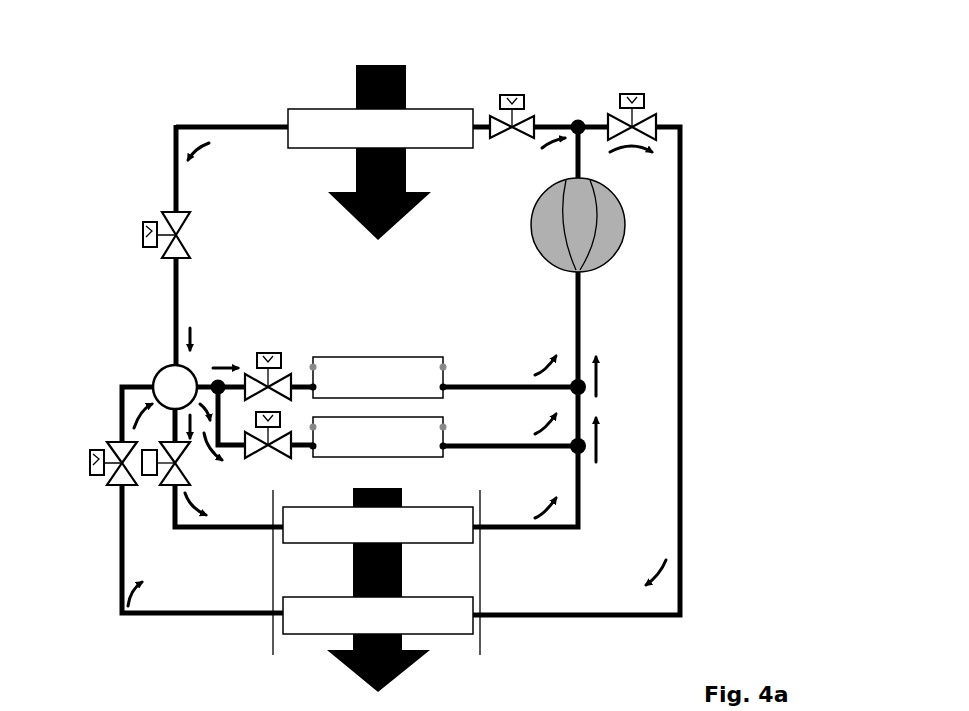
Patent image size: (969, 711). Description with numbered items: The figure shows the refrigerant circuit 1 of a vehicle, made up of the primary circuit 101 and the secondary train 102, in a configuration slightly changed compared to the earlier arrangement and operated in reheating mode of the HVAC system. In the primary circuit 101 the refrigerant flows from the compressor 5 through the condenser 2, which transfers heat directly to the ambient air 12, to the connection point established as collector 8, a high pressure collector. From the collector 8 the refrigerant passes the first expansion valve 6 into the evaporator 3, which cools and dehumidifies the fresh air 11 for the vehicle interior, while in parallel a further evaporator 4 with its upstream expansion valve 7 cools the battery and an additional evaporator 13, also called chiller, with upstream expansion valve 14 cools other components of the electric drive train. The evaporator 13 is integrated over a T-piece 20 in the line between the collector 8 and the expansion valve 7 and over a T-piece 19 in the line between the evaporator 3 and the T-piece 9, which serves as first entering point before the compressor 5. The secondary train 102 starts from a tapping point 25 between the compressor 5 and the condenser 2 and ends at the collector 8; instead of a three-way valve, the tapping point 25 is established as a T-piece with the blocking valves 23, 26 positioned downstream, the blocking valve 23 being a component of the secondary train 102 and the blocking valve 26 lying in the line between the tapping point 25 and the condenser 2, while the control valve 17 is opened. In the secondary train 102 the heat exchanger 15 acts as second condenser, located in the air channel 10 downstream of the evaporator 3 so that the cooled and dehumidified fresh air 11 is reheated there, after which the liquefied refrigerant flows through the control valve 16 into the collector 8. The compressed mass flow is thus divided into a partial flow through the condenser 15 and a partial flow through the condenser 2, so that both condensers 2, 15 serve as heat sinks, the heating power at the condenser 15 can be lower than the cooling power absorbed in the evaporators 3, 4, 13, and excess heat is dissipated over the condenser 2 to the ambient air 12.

The refrigerant circuit 1 is at (772, 166).
The condenser 2 is at (302, 123).
The evaporator 3 is at (440, 522).
The evaporator 4 is at (387, 370).
The compressor 5 is at (541, 214).
The expansion valve 6 is at (178, 464).
The expansion valve 7 is at (266, 352).
The collector 8 is at (168, 372).
The T-piece 9 is at (585, 394).
The air channel 10 is at (445, 643).
The fresh air 11 is at (340, 663).
The ambient air 12 is at (406, 93).
The evaporator 13 is at (387, 427).
The expansion valve 14 is at (266, 457).
The heat exchanger 15 is at (303, 614).
The control valve 16 is at (96, 455).
The control valve 17 is at (143, 222).
The T-piece 19 is at (583, 454).
The T-piece 20 is at (212, 380).
The blocking valve 23 is at (648, 103).
The tapping point 25 is at (582, 122).
The blocking valve 26 is at (526, 102).
The primary circuit 101 is at (160, 135).
The secondary train 102 is at (681, 378).